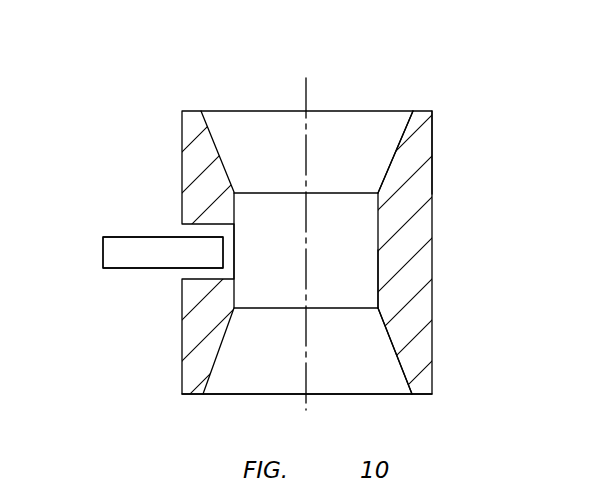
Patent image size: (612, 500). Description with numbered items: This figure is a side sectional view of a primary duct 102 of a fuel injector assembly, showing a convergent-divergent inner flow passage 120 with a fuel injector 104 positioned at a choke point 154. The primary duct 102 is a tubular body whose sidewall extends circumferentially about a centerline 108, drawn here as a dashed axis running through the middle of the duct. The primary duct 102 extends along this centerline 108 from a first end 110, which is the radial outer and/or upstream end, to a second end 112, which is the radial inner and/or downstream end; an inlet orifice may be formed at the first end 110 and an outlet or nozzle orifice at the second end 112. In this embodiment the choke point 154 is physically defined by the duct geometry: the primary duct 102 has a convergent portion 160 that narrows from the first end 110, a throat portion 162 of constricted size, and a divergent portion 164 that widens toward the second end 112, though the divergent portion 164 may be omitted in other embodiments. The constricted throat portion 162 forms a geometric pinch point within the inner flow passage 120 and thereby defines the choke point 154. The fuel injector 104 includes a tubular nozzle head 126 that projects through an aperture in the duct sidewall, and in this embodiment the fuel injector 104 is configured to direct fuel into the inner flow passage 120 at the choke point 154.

The primary duct 102 is at (466, 106).
The centerline 108 is at (307, 83).
The inner flow passage 120 is at (259, 132).
The first end 110 is at (409, 120).
The convergent portion 160 is at (397, 152).
The choke point 154 is at (356, 241).
The throat portion 162 is at (380, 285).
The divergent portion 164 is at (392, 338).
The second end 112 is at (412, 394).
The fuel injector 104 is at (118, 268).
The nozzle head 126 is at (163, 252).